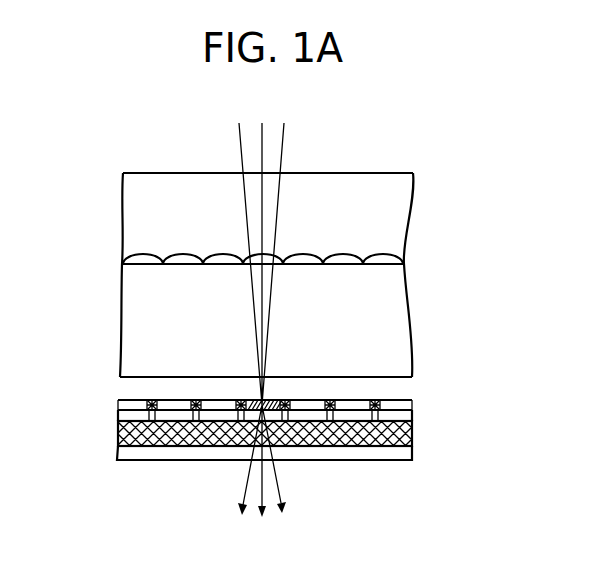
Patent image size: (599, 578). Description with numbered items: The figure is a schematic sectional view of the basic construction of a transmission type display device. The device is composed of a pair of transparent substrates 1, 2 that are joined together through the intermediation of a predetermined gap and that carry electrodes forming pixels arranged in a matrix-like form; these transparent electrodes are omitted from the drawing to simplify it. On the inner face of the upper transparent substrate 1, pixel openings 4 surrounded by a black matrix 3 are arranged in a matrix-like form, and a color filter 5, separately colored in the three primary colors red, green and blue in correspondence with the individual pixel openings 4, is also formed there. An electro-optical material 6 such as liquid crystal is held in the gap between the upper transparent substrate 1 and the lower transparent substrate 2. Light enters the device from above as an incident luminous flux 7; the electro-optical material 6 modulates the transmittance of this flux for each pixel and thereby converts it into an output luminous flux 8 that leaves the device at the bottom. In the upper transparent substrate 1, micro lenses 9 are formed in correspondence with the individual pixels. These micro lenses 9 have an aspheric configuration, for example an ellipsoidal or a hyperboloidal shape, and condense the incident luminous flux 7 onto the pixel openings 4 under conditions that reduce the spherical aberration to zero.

The upper transparent substrate 1 is at (108, 175).
The lower transparent substrate 2 is at (122, 450).
The black matrix 3 is at (377, 399).
The pixel openings 4 is at (353, 399).
The color filter 5 is at (407, 415).
The electro-optical material 6 is at (412, 432).
The incident luminous flux 7 is at (285, 143).
The output luminous flux 8 is at (275, 485).
The micro lenses 9 is at (352, 256).